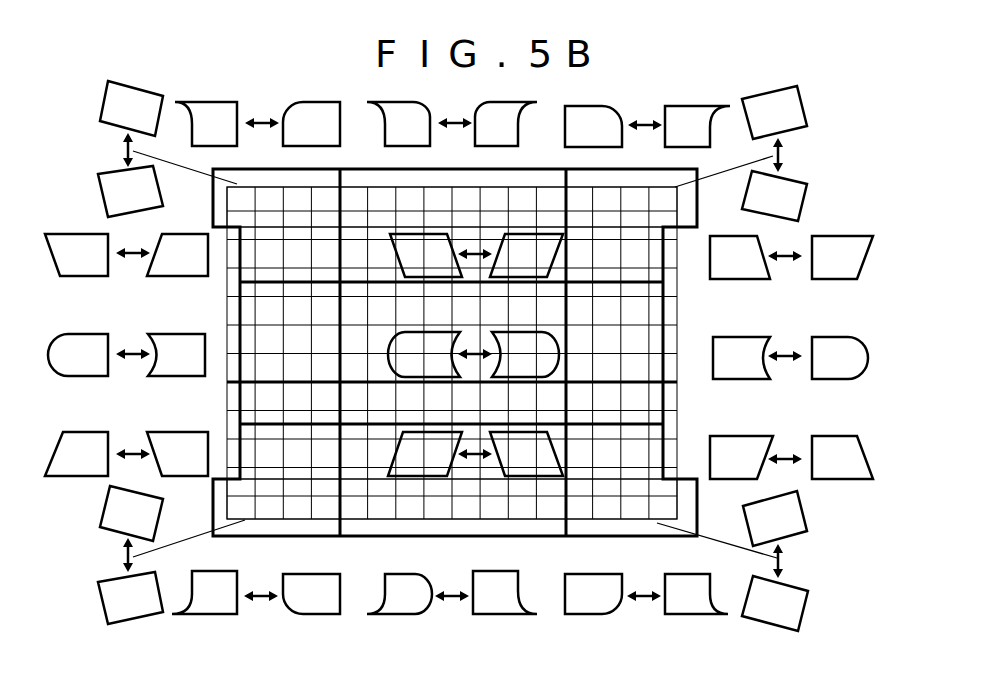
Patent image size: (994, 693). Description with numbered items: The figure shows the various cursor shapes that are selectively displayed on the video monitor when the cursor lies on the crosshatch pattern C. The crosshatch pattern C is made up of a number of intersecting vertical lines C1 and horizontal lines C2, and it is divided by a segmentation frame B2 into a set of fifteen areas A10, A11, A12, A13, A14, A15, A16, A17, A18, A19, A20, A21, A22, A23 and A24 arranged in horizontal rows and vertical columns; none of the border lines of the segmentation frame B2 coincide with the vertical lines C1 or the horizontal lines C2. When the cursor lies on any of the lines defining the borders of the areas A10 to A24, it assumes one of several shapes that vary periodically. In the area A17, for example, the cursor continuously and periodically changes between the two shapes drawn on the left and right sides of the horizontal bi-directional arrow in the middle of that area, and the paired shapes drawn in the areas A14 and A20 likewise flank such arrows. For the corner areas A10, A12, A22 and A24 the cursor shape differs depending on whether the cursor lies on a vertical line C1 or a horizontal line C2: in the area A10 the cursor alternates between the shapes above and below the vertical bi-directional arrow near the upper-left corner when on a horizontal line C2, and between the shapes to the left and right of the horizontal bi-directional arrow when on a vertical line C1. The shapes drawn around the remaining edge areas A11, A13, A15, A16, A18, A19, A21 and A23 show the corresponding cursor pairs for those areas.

The area A10 is at (263, 127).
The area A11 is at (453, 207).
The area A12 is at (645, 128).
The area A13 is at (290, 254).
The area A14 is at (453, 254).
The area A15 is at (614, 254).
The area A16 is at (290, 332).
The area A17 is at (453, 332).
The area A18 is at (614, 332).
The area A19 is at (290, 451).
The area A20 is at (453, 451).
The area A21 is at (614, 451).
The area A22 is at (262, 590).
The area A23 is at (453, 499).
The area A24 is at (647, 593).
The crosshatch pattern C is at (677, 318).
The vertical lines C1 is at (427, 316).
The horizontal lines C2 is at (468, 408).
The segmentation frame B2 is at (662, 399).